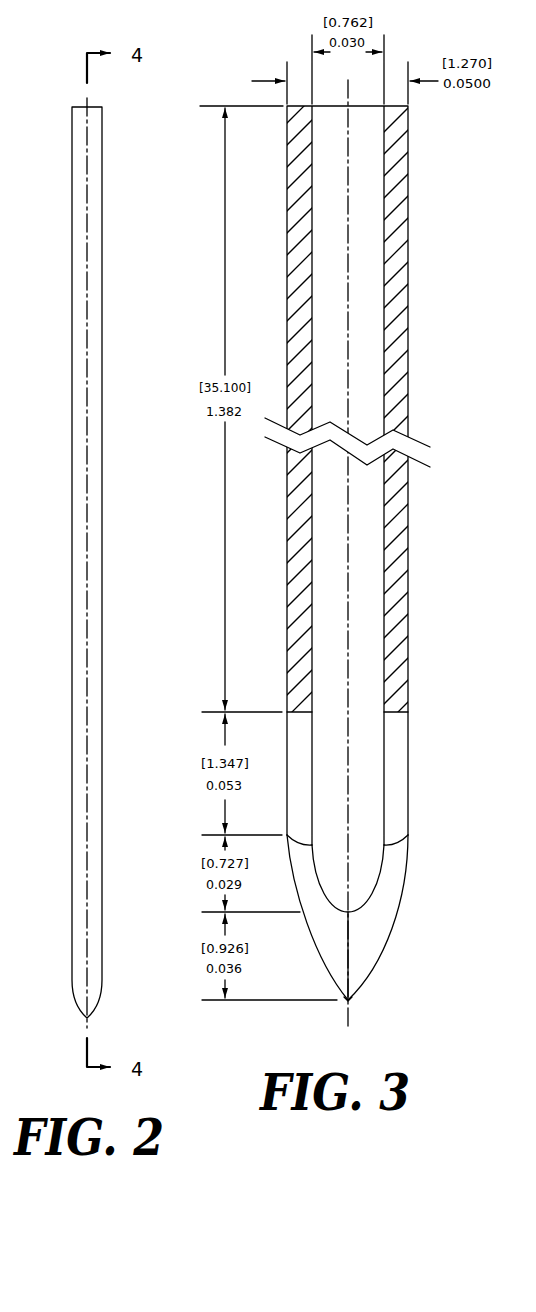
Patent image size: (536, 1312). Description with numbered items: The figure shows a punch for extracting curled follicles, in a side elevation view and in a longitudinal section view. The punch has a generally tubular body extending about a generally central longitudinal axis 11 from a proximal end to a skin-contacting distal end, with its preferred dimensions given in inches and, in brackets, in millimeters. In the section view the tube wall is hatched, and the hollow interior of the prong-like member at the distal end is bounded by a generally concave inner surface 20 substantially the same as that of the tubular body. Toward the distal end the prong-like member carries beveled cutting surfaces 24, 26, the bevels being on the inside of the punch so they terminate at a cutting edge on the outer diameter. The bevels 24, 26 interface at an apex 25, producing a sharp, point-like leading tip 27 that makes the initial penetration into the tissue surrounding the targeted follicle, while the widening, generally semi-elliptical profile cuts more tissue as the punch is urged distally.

In FIG. 2, the central longitudinal axis 11 is at (87, 428).
In FIG. 3, the concave inner surface 20 is at (358, 873).
In FIG. 3, the beveled cutting surface 24 is at (318, 914).
In FIG. 3, the apex 25 is at (348, 950).
In FIG. 3, the beveled cutting surface 26 is at (372, 930).
In FIG. 3, the leading tip 27 is at (349, 1001).